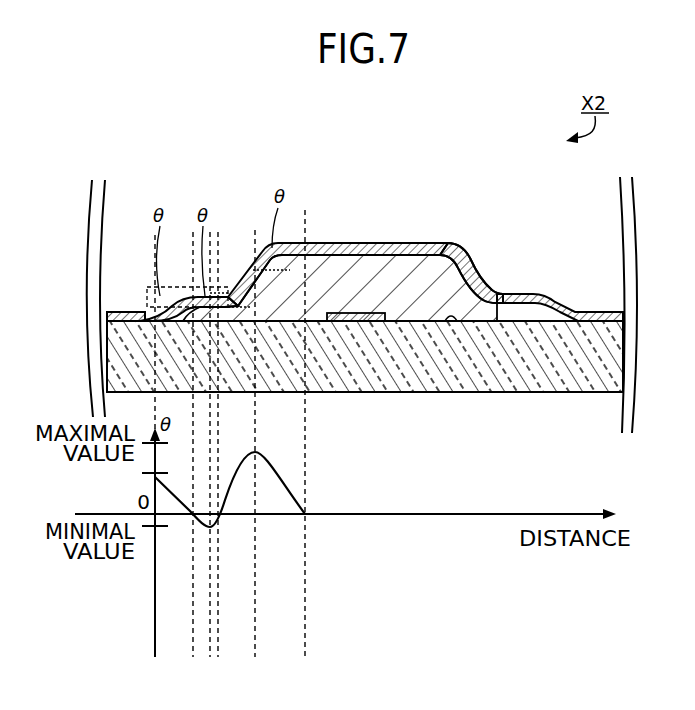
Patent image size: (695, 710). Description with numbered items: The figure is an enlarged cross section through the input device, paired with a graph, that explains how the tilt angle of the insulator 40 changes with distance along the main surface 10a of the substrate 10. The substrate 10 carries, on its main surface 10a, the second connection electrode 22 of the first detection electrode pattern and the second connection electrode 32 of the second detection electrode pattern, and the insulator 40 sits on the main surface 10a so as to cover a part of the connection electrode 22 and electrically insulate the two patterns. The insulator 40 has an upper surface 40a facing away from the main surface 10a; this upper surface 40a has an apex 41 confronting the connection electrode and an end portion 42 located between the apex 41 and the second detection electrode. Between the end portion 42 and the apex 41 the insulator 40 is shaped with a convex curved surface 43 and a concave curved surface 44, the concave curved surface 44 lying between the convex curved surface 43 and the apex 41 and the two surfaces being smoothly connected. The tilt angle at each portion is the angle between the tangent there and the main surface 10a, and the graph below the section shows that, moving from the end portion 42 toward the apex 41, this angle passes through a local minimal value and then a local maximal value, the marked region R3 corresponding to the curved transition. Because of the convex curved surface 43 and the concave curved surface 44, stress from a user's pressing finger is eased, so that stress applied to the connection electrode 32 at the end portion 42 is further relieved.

The substrate 10 is at (523, 368).
The main surface of the substrate 10a is at (450, 322).
The second connection electrode 22 is at (362, 322).
The second connection electrode 32 is at (331, 249).
The insulator 40 is at (411, 260).
The upper surface 40a is at (456, 251).
The apex 41 is at (378, 262).
The end portion 42 is at (139, 313).
The convex curved surface 43 is at (178, 304).
The concave curved surface 44 is at (224, 292).
The region R3 is at (147, 284).